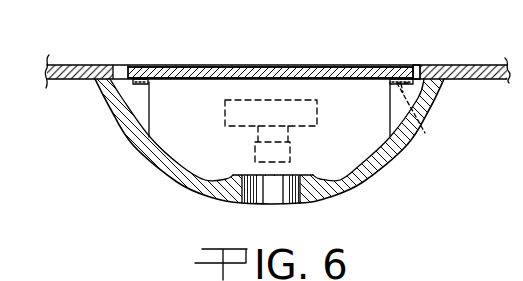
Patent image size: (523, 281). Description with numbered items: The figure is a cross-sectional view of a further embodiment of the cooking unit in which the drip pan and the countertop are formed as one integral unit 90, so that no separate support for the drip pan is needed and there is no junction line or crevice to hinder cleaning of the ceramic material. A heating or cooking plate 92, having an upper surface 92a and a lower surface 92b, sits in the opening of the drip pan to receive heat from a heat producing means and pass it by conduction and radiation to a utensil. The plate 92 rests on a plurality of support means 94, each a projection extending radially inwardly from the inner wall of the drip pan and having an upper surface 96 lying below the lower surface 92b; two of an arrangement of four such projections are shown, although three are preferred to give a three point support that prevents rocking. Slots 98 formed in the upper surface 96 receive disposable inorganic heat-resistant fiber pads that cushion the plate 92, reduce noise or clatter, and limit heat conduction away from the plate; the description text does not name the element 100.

The integral unit 90 is at (454, 67).
The heating or cooking plate 92 is at (190, 73).
The upper surface 92a is at (267, 66).
The lower surface 92b is at (327, 82).
The support means 94 is at (426, 101).
The upper surface 96 is at (418, 72).
The slots 98 is at (392, 81).
The hidden fastener 100 is at (426, 134).